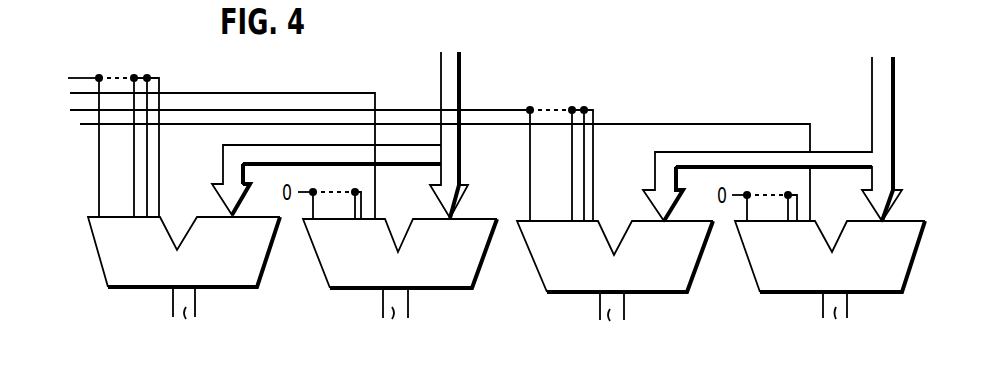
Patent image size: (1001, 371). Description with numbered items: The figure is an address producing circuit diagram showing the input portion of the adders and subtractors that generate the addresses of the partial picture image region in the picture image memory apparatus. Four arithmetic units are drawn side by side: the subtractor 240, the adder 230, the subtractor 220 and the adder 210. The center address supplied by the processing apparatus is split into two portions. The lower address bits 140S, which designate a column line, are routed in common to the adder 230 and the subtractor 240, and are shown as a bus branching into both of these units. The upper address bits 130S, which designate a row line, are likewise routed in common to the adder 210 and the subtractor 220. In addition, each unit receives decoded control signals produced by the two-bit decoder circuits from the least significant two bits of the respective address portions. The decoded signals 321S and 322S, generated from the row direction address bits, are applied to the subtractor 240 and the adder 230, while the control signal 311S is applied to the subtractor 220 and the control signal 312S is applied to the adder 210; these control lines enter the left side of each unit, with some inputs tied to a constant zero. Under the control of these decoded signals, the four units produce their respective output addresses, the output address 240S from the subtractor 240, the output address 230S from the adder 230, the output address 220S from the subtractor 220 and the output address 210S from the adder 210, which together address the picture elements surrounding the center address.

The decoded signal 321S is at (74, 76).
The decoded signal 322S is at (70, 93).
The control signal 311S is at (72, 109).
The control signal 312S is at (80, 124).
The lower address bits 140S is at (343, 123).
The upper address bits 130S is at (773, 126).
The subtractor 240 is at (259, 277).
The adder 230 is at (471, 286).
The subtractor 220 is at (690, 290).
The adder 210 is at (905, 290).
The output address 240S is at (192, 321).
The output address 230S is at (402, 321).
The output address 220S is at (617, 323).
The output address 210S is at (842, 324).